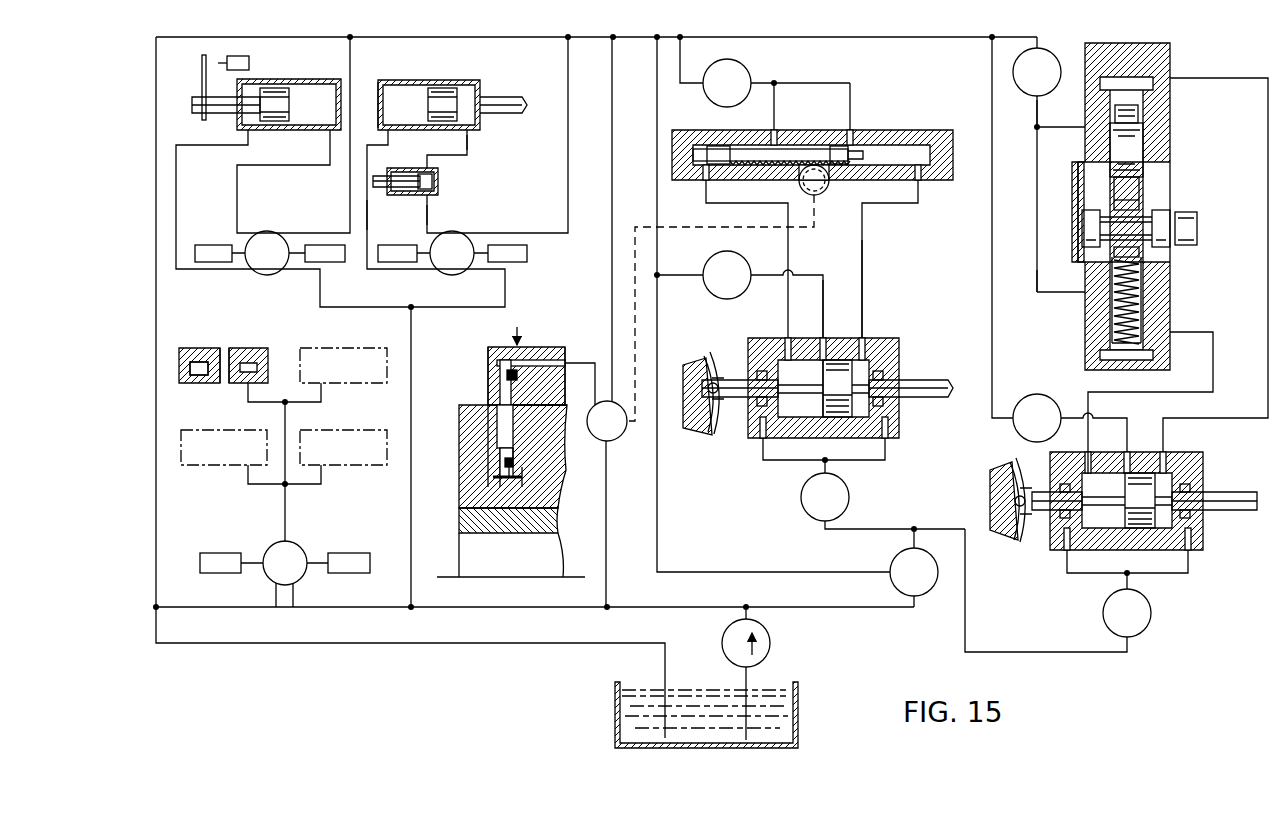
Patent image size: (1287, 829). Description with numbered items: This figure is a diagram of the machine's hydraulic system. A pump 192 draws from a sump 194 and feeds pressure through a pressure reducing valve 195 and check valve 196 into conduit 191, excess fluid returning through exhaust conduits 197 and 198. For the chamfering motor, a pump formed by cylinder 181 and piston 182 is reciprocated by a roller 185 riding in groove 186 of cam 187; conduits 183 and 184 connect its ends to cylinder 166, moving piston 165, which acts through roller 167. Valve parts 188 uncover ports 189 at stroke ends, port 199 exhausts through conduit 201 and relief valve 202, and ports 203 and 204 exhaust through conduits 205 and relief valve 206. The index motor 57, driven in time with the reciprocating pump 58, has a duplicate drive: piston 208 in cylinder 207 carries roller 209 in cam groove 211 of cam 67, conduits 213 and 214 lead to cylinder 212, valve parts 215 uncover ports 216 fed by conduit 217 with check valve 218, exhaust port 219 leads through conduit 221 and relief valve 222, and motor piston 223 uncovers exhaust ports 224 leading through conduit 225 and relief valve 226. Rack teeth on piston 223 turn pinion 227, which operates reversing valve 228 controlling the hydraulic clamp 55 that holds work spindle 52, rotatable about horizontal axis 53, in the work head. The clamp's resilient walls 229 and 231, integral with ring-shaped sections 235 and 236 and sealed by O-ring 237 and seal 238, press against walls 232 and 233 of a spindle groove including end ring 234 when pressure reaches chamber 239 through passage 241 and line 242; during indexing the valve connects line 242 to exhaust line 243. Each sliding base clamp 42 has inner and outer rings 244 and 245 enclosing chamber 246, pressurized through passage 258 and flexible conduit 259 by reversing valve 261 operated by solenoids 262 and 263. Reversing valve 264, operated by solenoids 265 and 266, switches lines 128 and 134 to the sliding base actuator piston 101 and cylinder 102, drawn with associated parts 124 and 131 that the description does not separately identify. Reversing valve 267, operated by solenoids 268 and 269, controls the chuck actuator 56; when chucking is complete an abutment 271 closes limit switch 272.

The sliding base clamp 42 is at (323, 342).
The work spindle 52 is at (535, 513).
The horizontal axis 53 is at (515, 577).
The hydraulic clamp 55 is at (515, 327).
The hydraulic piston and cylinder unit 56 is at (330, 79).
The reciprocating fluid motor 57 is at (684, 130).
The reciprocating pump 58 is at (891, 338).
The cam 67 is at (718, 412).
The piston 101 is at (440, 80).
The cylinder 102 is at (383, 80).
The small cylinder 124 is at (436, 185).
The hydraulic line 128 is at (367, 216).
The hydraulic line 131 is at (470, 142).
The hydraulic line 134 is at (430, 215).
The motor piston 165 is at (1145, 182).
The cylinder 166 is at (1160, 135).
The roller 167 is at (1195, 226).
The pump cylinder 181 is at (1130, 540).
The pump piston 182 is at (1140, 475).
The conduit 183 is at (1213, 350).
The conduit 184 is at (1268, 393).
The roller 185 is at (1026, 482).
The groove 186 is at (1006, 482).
The cam 187 is at (1015, 516).
The valve parts 188 is at (1230, 492).
The ports 189 is at (1200, 519).
The conduit 191 is at (1130, 578).
The pump 192 is at (770, 648).
The sump 194 is at (795, 712).
The pressure reducing valve 195 is at (940, 552).
The check valve 196 is at (1104, 616).
The exhaust conduit 197 is at (762, 572).
The exhaust conduit 198 is at (583, 37).
The port 199 is at (1125, 458).
The conduit 201 is at (1105, 418).
The pressure relief valve 202 is at (1035, 396).
The port 203 is at (1085, 290).
The port 204 is at (1085, 132).
The conduits 205 is at (1050, 127).
The relief valve 206 is at (1060, 70).
The cylinder 207 is at (858, 430).
The piston 208 is at (840, 398).
The roller 209 is at (698, 388).
The cam groove 211 is at (706, 420).
The cylinder 212 is at (924, 180).
The conduit 213 is at (788, 312).
The conduit 214 is at (862, 255).
The valve parts 215 is at (920, 382).
The ports 216 is at (760, 372).
The conduit 217 is at (770, 466).
The check valve 218 is at (850, 497).
The central exhaust port 219 is at (828, 338).
The conduit 221 is at (823, 278).
The pressure relief valve 222 is at (746, 262).
The piston 223 is at (758, 150).
The exhaust ports 224 is at (848, 130).
The conduit 225 is at (850, 95).
The pressure relief valve 226 is at (712, 70).
The pinion 227 is at (828, 185).
The reversing valve 228 is at (621, 437).
The side wall 229 is at (505, 435).
The side wall 231 is at (520, 412).
The side wall 232 is at (490, 412).
The side wall 233 is at (520, 452).
The end ring 234 is at (490, 478).
The ring-shaped section 235 is at (490, 347).
The ring-shaped section 236 is at (565, 345).
The O-ring 237 is at (522, 480).
The seal 238 is at (505, 374).
The chamber 239 is at (505, 460).
The passage 241 is at (548, 347).
The hydraulic line 242 is at (598, 366).
The exhaust line 243 is at (612, 210).
The inner ring 244 is at (240, 348).
The outer ring 245 is at (197, 362).
The chamber 246 is at (222, 348).
The passage 258 is at (248, 394).
The flexible conduit 259 is at (287, 415).
The reversing valve 261 is at (272, 547).
The solenoid 262 is at (340, 573).
The solenoid 263 is at (230, 573).
The reversing valve 264 is at (455, 275).
The solenoid 265 is at (527, 253).
The solenoid 266 is at (400, 245).
The reversing valve 267 is at (280, 237).
The solenoid 268 is at (322, 262).
The solenoid 269 is at (212, 245).
The abutment 271 is at (202, 70).
The limit switch 272 is at (249, 63).